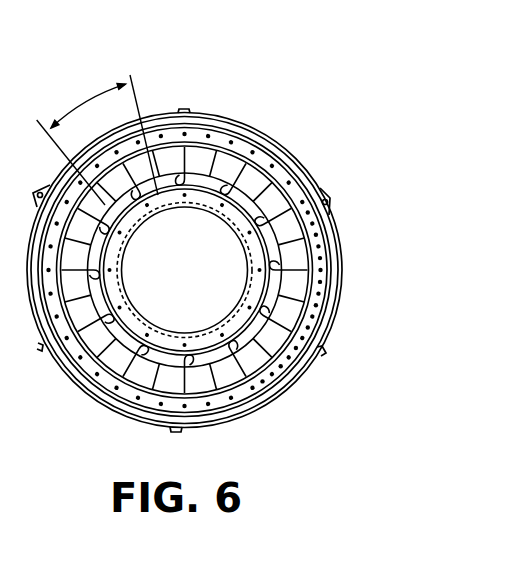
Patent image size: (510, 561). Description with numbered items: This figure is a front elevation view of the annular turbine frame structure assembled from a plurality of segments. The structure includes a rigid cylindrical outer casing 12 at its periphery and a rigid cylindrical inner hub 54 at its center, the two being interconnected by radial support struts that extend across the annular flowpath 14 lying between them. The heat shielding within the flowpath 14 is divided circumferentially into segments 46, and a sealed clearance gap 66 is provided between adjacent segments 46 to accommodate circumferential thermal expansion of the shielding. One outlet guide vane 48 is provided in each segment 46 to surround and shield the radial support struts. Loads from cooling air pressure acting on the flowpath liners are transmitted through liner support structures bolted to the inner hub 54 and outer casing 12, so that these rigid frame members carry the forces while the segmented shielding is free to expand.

The outer casing 12 is at (215, 116).
The flowpath 14 is at (267, 193).
The segments 46 is at (83, 108).
The outlet guide vane 48 is at (282, 223).
The inner hub 54 is at (155, 215).
The sealed clearance gap 66 is at (120, 333).